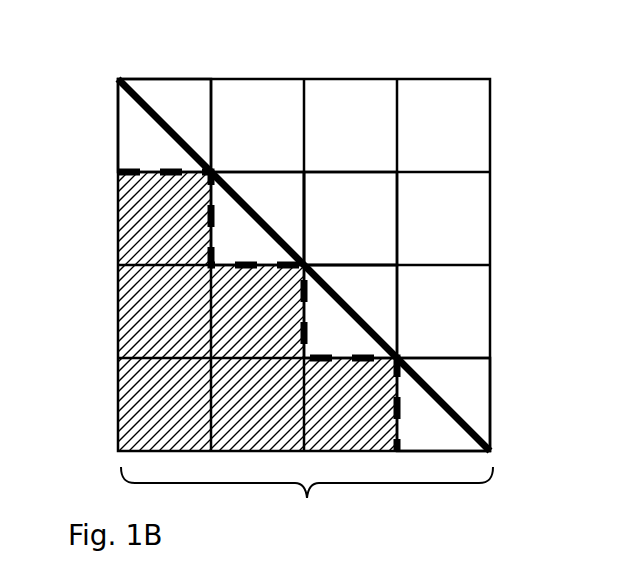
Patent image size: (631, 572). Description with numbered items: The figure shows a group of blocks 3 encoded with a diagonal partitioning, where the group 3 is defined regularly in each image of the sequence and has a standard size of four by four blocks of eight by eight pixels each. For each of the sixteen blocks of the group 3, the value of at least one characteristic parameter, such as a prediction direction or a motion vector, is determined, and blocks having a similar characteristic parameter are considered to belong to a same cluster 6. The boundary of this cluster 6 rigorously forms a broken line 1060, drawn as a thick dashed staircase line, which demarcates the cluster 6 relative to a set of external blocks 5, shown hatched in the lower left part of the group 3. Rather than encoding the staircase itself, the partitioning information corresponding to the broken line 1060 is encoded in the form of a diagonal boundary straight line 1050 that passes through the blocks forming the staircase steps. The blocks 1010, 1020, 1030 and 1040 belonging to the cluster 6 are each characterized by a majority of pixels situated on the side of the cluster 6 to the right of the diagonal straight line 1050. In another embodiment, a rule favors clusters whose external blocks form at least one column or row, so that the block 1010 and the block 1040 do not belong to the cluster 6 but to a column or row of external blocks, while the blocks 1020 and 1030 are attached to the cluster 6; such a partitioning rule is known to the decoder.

The group of blocks 3 is at (307, 497).
The set of external blocks 5 is at (172, 322).
The cluster 6 is at (352, 200).
The block 1010 is at (181, 88).
The block 1020 is at (278, 203).
The block 1030 is at (373, 284).
The block 1040 is at (460, 384).
The boundary straight line 1050 is at (138, 103).
The broken line 1060 is at (207, 223).